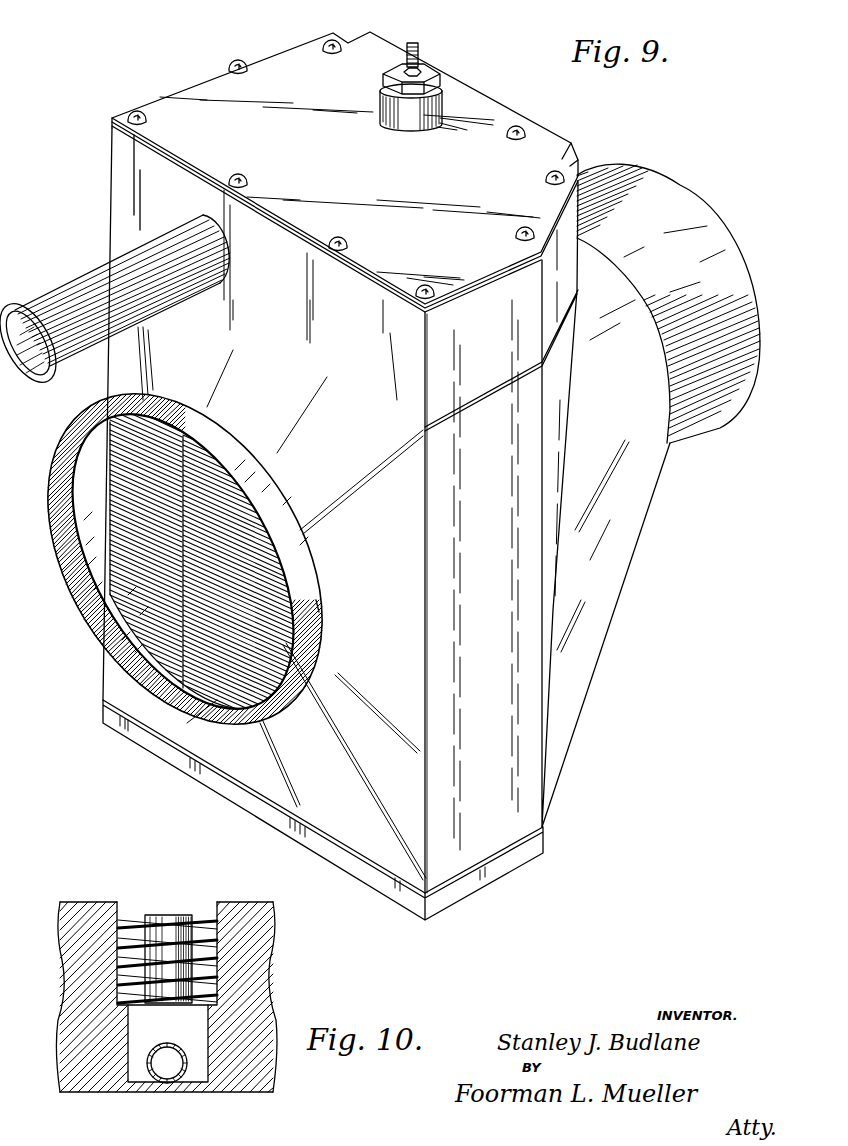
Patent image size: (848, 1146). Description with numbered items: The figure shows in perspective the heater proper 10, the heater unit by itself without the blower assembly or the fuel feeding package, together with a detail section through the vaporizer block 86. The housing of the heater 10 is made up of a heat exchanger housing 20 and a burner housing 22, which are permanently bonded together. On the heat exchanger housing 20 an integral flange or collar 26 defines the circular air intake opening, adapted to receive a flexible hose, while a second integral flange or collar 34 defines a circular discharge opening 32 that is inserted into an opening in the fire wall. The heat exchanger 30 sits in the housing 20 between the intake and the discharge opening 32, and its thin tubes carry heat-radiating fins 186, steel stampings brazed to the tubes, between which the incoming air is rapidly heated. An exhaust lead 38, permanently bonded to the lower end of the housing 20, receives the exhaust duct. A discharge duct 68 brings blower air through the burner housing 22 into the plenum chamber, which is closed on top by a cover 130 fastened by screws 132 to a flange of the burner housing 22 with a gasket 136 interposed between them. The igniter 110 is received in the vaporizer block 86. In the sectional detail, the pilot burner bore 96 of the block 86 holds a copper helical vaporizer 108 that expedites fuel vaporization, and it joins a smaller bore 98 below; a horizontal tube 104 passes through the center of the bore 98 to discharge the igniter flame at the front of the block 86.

In FIG. 9, the heater proper 10 is at (162, 83).
In FIG. 9, the heat exchanger housing 20 is at (524, 800).
In FIG. 9, the burner housing 22 is at (487, 377).
In FIG. 9, the flange or collar 26 is at (696, 420).
In FIG. 9, the heat exchanger 30 is at (132, 632).
In FIG. 9, the circular discharge opening 32 is at (52, 558).
In FIG. 9, the flange or collar 34 is at (319, 620).
In FIG. 9, the exhaust lead 38 is at (213, 783).
In FIG. 9, the discharge duct 68 is at (63, 293).
In FIG. 10, the vaporizer block 86 is at (267, 970).
In FIG. 10, the pilot burner bore 96 is at (203, 913).
In FIG. 10, the smaller bore 98 is at (140, 1057).
In FIG. 10, the horizontal tube 104 is at (193, 1067).
In FIG. 10, the helical vaporizer 108 is at (133, 915).
In FIG. 9, the igniter 110 is at (441, 62).
In FIG. 9, the cover 130 is at (302, 50).
In FIG. 9, the screws 132 is at (239, 61).
In FIG. 9, the gasket 136 is at (112, 124).
In FIG. 9, the heat-radiating fins 186 is at (216, 509).